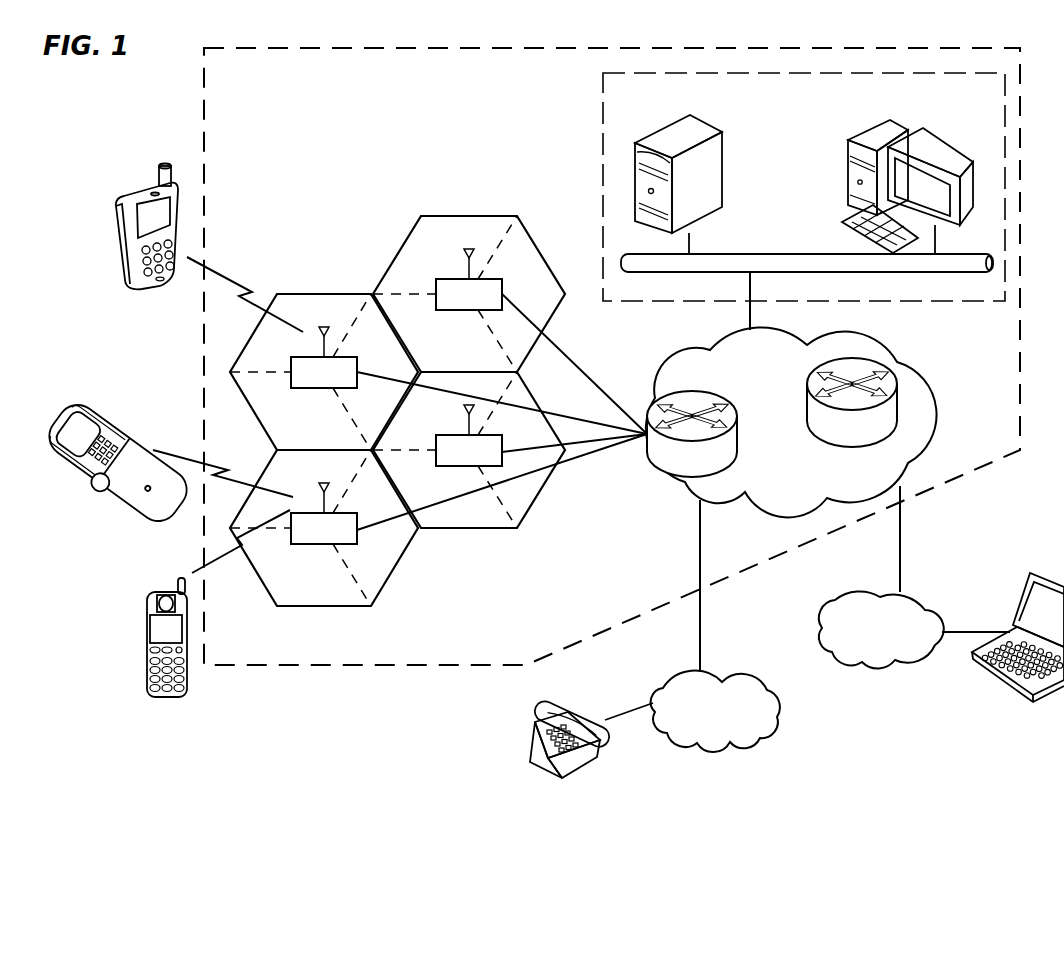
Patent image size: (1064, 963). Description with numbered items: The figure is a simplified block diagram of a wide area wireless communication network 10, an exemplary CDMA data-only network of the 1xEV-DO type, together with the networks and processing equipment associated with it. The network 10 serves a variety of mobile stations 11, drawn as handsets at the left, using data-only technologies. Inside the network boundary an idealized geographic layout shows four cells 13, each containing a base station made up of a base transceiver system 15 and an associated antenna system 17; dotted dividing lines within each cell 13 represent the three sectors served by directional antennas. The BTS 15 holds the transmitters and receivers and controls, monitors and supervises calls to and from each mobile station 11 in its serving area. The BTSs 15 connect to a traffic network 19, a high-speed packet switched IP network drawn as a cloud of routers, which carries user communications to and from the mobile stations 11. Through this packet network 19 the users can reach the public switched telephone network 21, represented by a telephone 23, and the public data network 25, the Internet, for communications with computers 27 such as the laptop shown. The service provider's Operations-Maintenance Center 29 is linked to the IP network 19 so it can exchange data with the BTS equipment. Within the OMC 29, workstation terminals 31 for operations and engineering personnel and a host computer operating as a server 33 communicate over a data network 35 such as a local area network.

The wide area wireless communication network 10 is at (203, 118).
The mobile station 11 is at (137, 188).
The cell 13 is at (538, 233).
The base transceiver system 15 is at (323, 392).
The antenna system 17 is at (324, 325).
The traffic network 19 is at (928, 366).
The public switched telephone network 21 is at (658, 683).
The telephone 23 is at (526, 744).
The public data network 25 is at (853, 667).
The computer 27 is at (1010, 602).
The Operations-Maintenance Center 29 is at (601, 139).
The workstation terminal 31 is at (962, 142).
The server 33 is at (727, 142).
The data network 35 is at (822, 253).